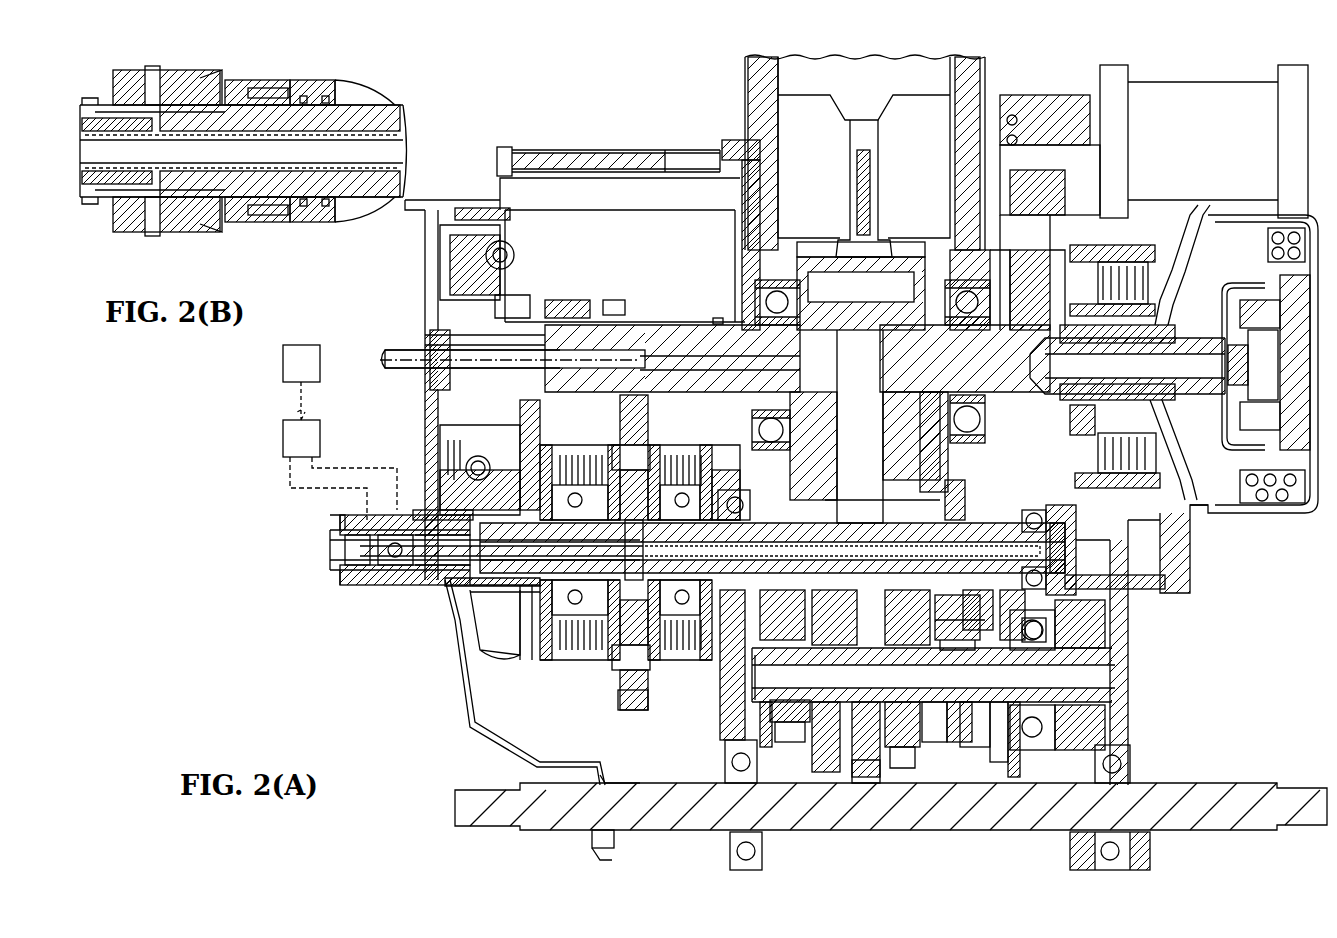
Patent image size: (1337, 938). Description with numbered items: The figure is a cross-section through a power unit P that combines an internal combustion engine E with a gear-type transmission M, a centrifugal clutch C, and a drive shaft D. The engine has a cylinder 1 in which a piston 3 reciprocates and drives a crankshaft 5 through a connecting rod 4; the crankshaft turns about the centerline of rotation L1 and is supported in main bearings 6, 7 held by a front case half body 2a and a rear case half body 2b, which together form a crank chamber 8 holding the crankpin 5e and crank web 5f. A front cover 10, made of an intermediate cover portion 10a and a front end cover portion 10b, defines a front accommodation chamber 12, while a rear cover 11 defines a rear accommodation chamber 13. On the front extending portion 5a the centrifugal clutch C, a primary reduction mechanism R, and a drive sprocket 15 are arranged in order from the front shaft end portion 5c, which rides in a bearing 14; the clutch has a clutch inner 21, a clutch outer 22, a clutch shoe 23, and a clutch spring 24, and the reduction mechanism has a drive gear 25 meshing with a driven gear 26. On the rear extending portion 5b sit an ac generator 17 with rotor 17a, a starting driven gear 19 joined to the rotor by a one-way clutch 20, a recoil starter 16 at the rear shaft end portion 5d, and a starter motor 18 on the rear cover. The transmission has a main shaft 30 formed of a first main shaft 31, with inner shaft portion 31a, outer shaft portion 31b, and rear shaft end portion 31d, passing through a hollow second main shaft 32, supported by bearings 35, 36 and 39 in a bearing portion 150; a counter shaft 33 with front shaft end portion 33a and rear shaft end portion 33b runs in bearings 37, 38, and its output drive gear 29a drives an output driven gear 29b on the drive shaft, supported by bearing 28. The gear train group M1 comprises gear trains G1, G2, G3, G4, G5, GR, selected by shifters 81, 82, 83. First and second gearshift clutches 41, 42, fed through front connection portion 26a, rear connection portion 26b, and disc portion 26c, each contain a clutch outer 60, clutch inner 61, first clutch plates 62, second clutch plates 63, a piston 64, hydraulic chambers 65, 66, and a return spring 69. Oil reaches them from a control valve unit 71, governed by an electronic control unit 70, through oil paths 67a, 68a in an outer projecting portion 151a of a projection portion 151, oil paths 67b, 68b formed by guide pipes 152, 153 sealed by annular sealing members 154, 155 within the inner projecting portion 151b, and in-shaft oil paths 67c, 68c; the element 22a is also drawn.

In FIG. 2A, the cylinder 1 is at (760, 140).
In FIG. 2A, the front case half body 2a is at (755, 200).
In FIG. 2A, the rear case half body 2b is at (955, 222).
In FIG. 2A, the piston 3 is at (917, 88).
In FIG. 2A, the connecting rod 4 is at (878, 185).
In FIG. 2A, the crankshaft 5 is at (745, 318).
In FIG. 2A, the front extending portion 5a is at (690, 318).
In FIG. 2A, the rear extending portion 5b is at (972, 395).
In FIG. 2A, the front shaft end portion 5c is at (430, 335).
In FIG. 2A, the rear shaft end portion 5d is at (1222, 335).
In FIG. 2A, the crankpin 5e is at (861, 316).
In FIG. 2A, the crank web 5f is at (825, 455).
In FIG. 2A, the main bearing 6 is at (780, 300).
In FIG. 2A, the main bearing 7 is at (965, 300).
In FIG. 2A, the crank chamber 8 is at (867, 426).
In FIG. 2A, the front cover 10 is at (575, 108).
In FIG. 2A, the intermediate cover portion 10a is at (595, 150).
In FIG. 2A, the front end cover portion 10b is at (455, 200).
In FIG. 2A, the rear cover 11 is at (1130, 612).
In FIG. 2A, the front accommodation chamber 12 is at (678, 185).
In FIG. 2A, the rear accommodation chamber 13 is at (1185, 555).
In FIG. 2A, the bearing 14 is at (425, 380).
In FIG. 2A, the drive sprocket 15 is at (718, 322).
In FIG. 2A, the recoil starter 16 is at (1263, 245).
In FIG. 2A, the ac generator 17 is at (1165, 235).
In FIG. 2A, the rotor 17a is at (1135, 245).
In FIG. 2A, the starter motor 18 is at (1218, 105).
In FIG. 2A, the starting driven gear 19 is at (1020, 290).
In FIG. 2A, the one-way clutch 20 is at (1030, 360).
In FIG. 2A, the clutch inner 21 is at (515, 245).
In FIG. 2A, the clutch outer 22 is at (460, 210).
In FIG. 2A, the flange portion 22a is at (562, 305).
In FIG. 2A, the clutch shoe 23 is at (448, 245).
In FIG. 2A, the clutch spring 24 is at (448, 420).
In FIG. 2A, the drive gear 25 is at (620, 305).
In FIG. 2B, the driven gear 26 is at (285, 100).
In FIG. 2A, the driven gear 26 is at (635, 690).
In FIG. 2A, the front connection portion 26a is at (520, 455).
In FIG. 2A, the rear connection portion 26b is at (715, 455).
In FIG. 2A, the disc portion 26c is at (660, 725).
In FIG. 2A, the bearing 28 is at (1125, 770).
In FIG. 2A, the output drive gear 29a is at (1105, 630).
In FIG. 2A, the output driven gear 29b is at (1085, 745).
In FIG. 2A, the main shaft 30 is at (1008, 546).
In FIG. 2A, the first main shaft 31 is at (718, 680).
In FIG. 2A, the inner shaft portion 31a is at (860, 520).
In FIG. 2B, the outer shaft portion 31b is at (290, 155).
In FIG. 2A, the outer shaft portion 31b is at (515, 630).
In FIG. 2A, the rear shaft end portion 31d is at (1065, 548).
In FIG. 2A, the second main shaft 32 is at (790, 440).
In FIG. 2A, the counter shaft 33 is at (1068, 662).
In FIG. 2A, the front shaft end portion 33a is at (765, 678).
In FIG. 2A, the rear shaft end portion 33b is at (1125, 690).
In FIG. 2A, the bearing 35 is at (730, 510).
In FIG. 2A, the bearing 36 is at (1038, 518).
In FIG. 2A, the bearing 37 is at (740, 832).
In FIG. 2A, the bearing 38 is at (1040, 590).
In FIG. 2A, the bearing 39 is at (445, 462).
In FIG. 2A, the first gearshift clutch 41 is at (580, 770).
In FIG. 2A, the second gearshift clutch 42 is at (705, 760).
In FIG. 2A, the clutch outer 60 is at (680, 665).
In FIG. 2A, the clutch inner 61 is at (540, 630).
In FIG. 2A, the first clutch plates 62 is at (672, 455).
In FIG. 2A, the second clutch plates 63 is at (640, 430).
In FIG. 2A, the piston 64 is at (655, 655).
In FIG. 2A, the hydraulic chamber 65 is at (552, 655).
In FIG. 2A, the hydraulic chamber 66 is at (610, 680).
In FIG. 2A, the oil path 67a is at (340, 520).
In FIG. 2B, the oil path 67b is at (130, 178).
In FIG. 2A, the oil path 67b is at (415, 515).
In FIG. 2B, the in-shaft oil path 67c is at (200, 172).
In FIG. 2A, the in-shaft oil path 67c is at (530, 585).
In FIG. 2A, the oil path 68a is at (340, 550).
In FIG. 2B, the oil path 68b is at (292, 172).
In FIG. 2A, the oil path 68b is at (480, 625).
In FIG. 2B, the in-shaft oil path 68c is at (360, 135).
In FIG. 2A, the in-shaft oil path 68c is at (700, 551).
In FIG. 2A, the return spring 69 is at (672, 610).
In FIG. 2A, the electronic control unit 70 is at (320, 360).
In FIG. 2A, the control valve unit 71 is at (320, 425).
In FIG. 2A, the shifter 81 is at (955, 520).
In FIG. 2A, the shifter 82 is at (928, 735).
In FIG. 2A, the shifter 83 is at (803, 722).
In FIG. 2A, the bearing portion 150 is at (455, 585).
In FIG. 2A, the projection portion 151 is at (388, 630).
In FIG. 2A, the outer projecting portion 151a is at (350, 625).
In FIG. 2A, the inner projecting portion 151b is at (405, 625).
In FIG. 2B, the guide pipe 152 is at (100, 185).
In FIG. 2B, the guide pipe 153 is at (240, 130).
In FIG. 2B, the annular sealing member 154 is at (110, 115).
In FIG. 2B, the annular sealing member 155 is at (352, 115).
In FIG. 2A, the centrifugal clutch C is at (560, 245).
In FIG. 2A, the drive shaft D is at (947, 818).
In FIG. 2A, the internal combustion engine E is at (1012, 85).
In FIG. 2A, the gear train G1 is at (1008, 775).
In FIG. 2A, the gear train G2 is at (835, 775).
In FIG. 2A, the gear train G3 is at (900, 775).
In FIG. 2A, the gear train G4 is at (772, 770).
In FIG. 2A, the gear train G5 is at (980, 751).
In FIG. 2A, the reverse gear train GR is at (868, 775).
In FIG. 2A, the centerline of rotation L1 is at (500, 330).
In FIG. 2A, the gear-type transmission M is at (520, 780).
In FIG. 2A, the transmission gear train group M1 is at (990, 800).
In FIG. 2A, the power unit P is at (360, 700).
In FIG. 2A, the primary reduction mechanism R is at (590, 295).